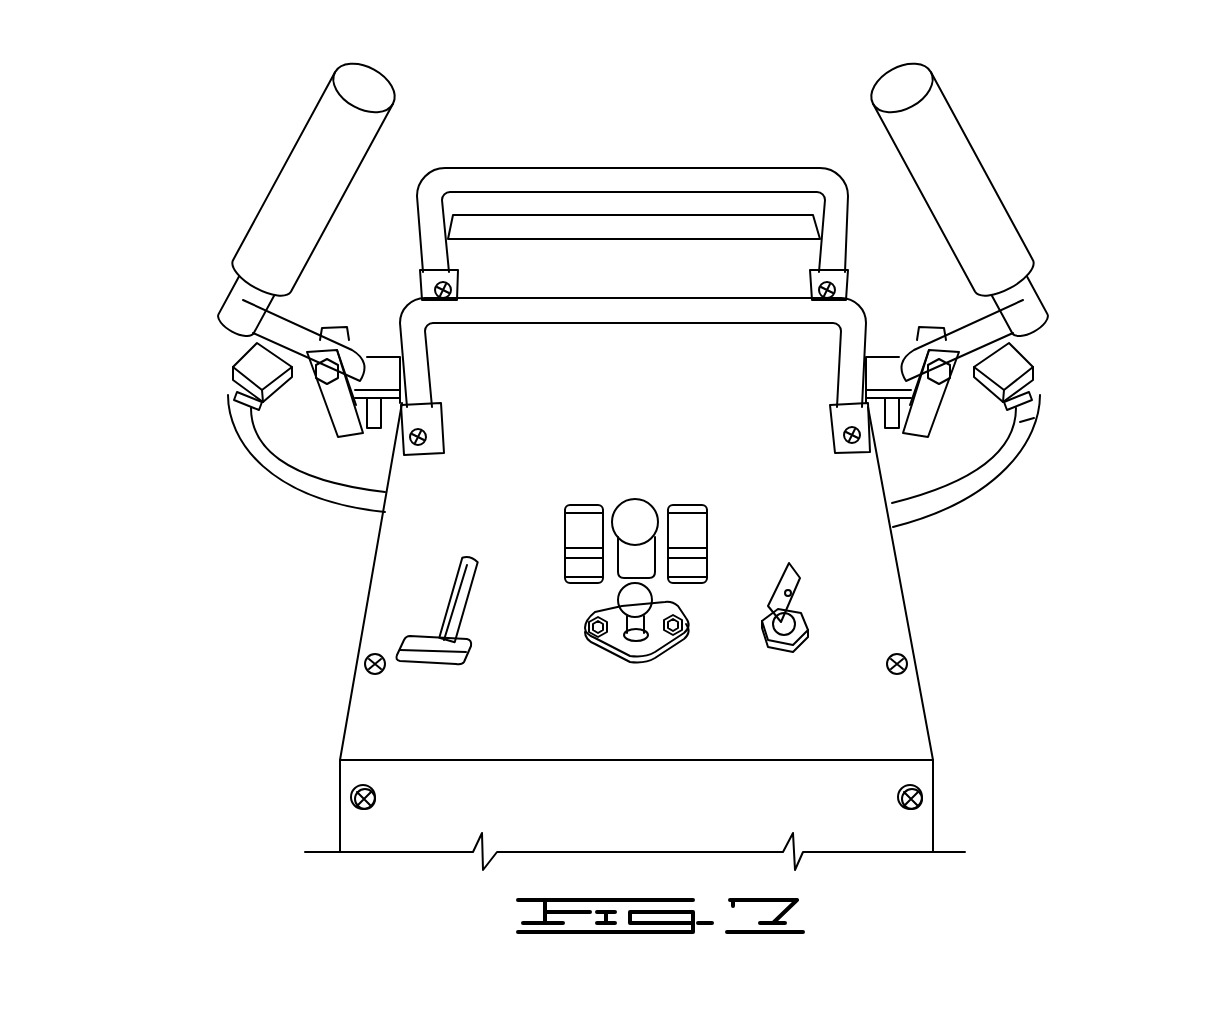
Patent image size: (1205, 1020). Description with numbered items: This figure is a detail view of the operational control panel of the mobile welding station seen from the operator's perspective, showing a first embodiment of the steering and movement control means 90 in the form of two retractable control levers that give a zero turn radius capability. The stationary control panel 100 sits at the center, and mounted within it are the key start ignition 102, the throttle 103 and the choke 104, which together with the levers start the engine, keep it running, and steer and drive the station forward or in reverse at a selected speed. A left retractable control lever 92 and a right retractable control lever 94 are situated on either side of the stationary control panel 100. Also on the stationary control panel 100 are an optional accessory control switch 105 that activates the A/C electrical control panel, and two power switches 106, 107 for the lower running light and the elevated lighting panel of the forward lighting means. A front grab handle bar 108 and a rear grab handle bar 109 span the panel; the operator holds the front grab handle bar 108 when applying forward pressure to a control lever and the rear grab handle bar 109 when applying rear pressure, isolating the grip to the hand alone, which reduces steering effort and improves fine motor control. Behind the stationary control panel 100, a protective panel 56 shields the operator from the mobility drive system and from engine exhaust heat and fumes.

The stationary control panel 100 is at (575, 92).
The protective panel 56 is at (363, 835).
The movement control means 90 is at (1076, 358).
The left retractable control lever 92 is at (232, 290).
The right retractable control lever 94 is at (1046, 285).
The key start ignition 102 is at (797, 647).
The throttle 103 is at (425, 637).
The choke 104 is at (622, 642).
The accessory control switch 105 is at (645, 503).
The power switch 106 is at (567, 513).
The power switch 107 is at (708, 545).
The front grab handle bar 108 is at (668, 168).
The rear grab handle bar 109 is at (577, 300).